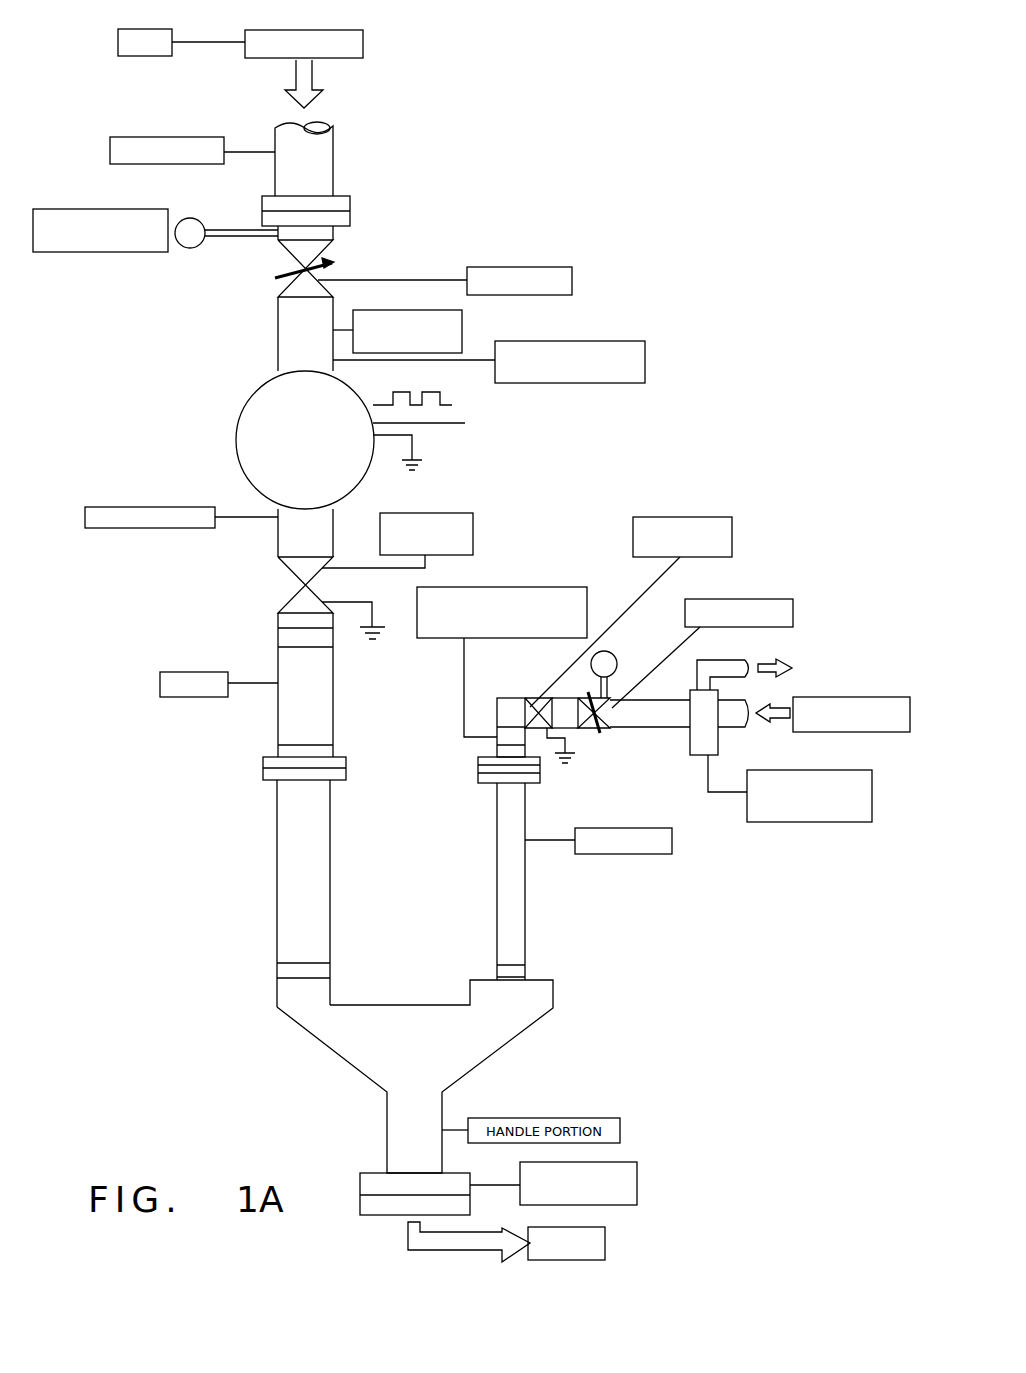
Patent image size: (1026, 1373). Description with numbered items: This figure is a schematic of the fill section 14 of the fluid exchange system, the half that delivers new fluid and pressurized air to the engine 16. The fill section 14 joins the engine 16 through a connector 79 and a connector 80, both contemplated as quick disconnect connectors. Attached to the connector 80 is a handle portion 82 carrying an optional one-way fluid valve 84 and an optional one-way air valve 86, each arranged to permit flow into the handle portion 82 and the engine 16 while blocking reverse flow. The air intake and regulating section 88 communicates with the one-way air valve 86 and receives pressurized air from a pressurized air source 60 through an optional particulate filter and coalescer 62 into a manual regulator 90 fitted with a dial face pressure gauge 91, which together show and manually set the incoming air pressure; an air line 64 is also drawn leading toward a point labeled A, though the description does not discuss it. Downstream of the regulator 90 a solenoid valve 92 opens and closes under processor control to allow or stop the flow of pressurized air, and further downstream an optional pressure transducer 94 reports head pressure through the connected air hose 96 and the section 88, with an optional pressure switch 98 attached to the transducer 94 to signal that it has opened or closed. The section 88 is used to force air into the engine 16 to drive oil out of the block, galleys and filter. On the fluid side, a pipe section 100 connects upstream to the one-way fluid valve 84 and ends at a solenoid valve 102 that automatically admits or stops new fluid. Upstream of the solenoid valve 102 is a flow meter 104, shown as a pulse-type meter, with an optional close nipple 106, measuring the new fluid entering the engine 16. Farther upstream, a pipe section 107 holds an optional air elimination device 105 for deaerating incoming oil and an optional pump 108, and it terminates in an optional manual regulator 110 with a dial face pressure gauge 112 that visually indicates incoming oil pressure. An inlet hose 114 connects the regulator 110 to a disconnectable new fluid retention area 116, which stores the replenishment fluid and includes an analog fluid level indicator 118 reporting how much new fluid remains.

The fill section 14 is at (686, 226).
The engine 16 is at (605, 1243).
The pressurized air source 60 is at (878, 697).
The particulate filter and coalescer 62 is at (793, 822).
The air outlet to A 64 is at (745, 660).
The connector 79 is at (408, 1238).
The connector 80 is at (637, 1178).
The handle portion 82 is at (430, 1053).
The one-way fluid valve 84 is at (277, 970).
The one-way gas (air) valve 86 is at (525, 972).
The air intake and regulating section 88 is at (703, 838).
The manual regulator 90 is at (793, 612).
The dial face pressure gauge 91 is at (613, 655).
The solenoid valve 92 is at (732, 536).
The pressure transducer 94 is at (535, 587).
The air hose 96 is at (618, 855).
The pressure switch 98 is at (437, 638).
The pipe section 100 is at (288, 720).
The solenoid valve 102 is at (473, 527).
The flow meter 104 is at (245, 425).
The air elimination device 105 is at (645, 365).
The close nipple 106 is at (140, 507).
The pipe section 107 is at (285, 312).
The pump 108 is at (462, 331).
The manual regulator 110 is at (535, 267).
The dial face pressure gauge 112 is at (183, 247).
The inlet hose 114 is at (157, 137).
The new fluid retention area 116 is at (363, 46).
The analog fluid level indicator 118 is at (118, 42).